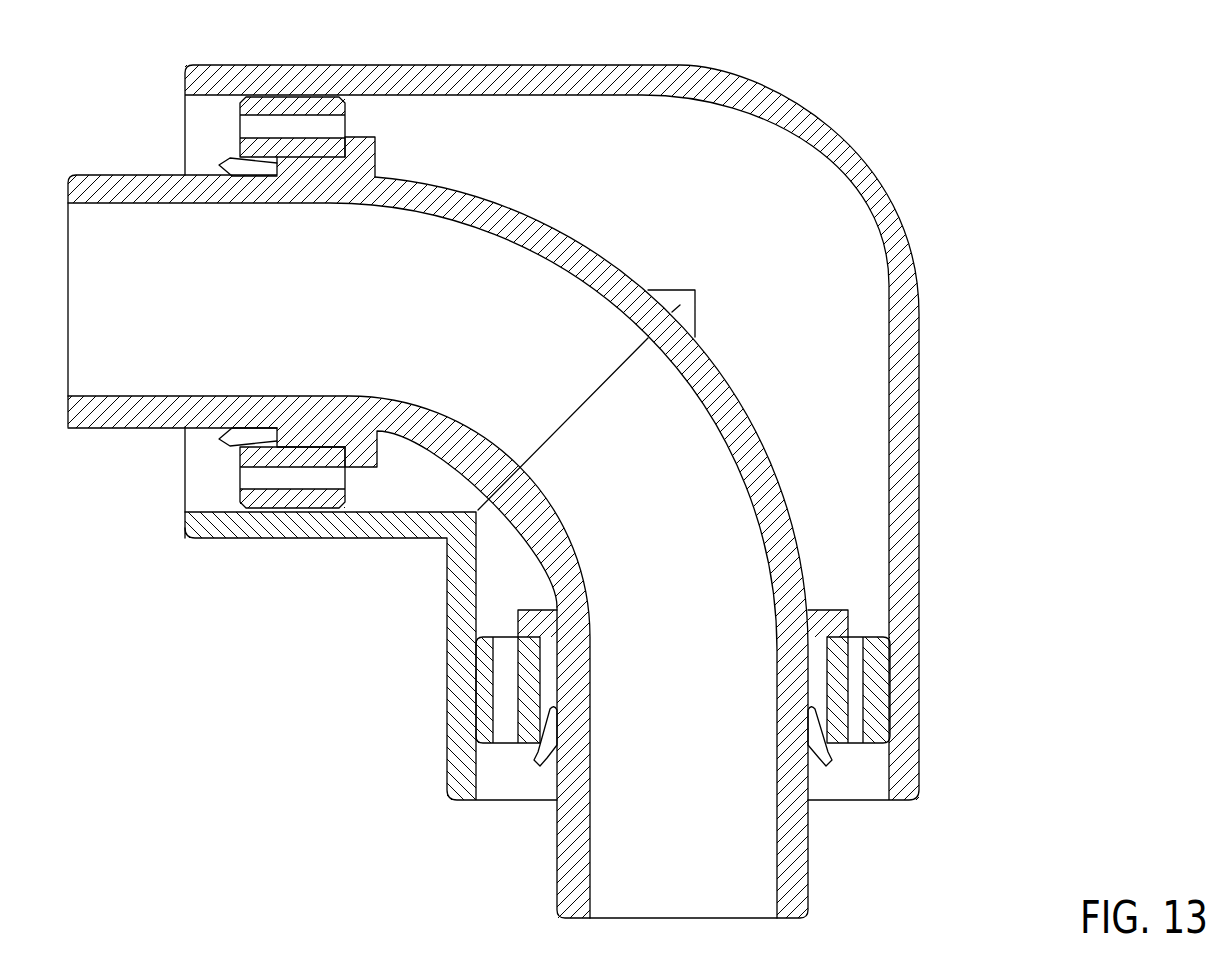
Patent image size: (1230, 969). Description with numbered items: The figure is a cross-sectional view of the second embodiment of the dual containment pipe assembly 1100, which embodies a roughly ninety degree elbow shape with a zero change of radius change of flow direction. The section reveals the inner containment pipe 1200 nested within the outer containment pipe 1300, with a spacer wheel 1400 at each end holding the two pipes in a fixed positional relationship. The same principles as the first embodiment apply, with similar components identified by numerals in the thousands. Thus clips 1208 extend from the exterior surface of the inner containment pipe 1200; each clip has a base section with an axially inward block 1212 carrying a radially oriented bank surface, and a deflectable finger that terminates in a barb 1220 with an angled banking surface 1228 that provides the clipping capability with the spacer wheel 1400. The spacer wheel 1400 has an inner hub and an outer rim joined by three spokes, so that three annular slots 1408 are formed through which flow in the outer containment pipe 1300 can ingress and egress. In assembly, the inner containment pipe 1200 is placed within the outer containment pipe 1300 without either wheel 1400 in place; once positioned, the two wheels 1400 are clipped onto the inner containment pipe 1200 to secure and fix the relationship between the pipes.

The dual containment pipe assembly 1100 is at (160, 794).
The inner containment pipe 1200 is at (93, 178).
The clip 1208 is at (543, 762).
The axially inward block 1212 is at (360, 150).
The barb 1220 is at (223, 443).
The angled banking surface 1228 is at (228, 160).
The outer containment pipe 1300 is at (198, 531).
The spacer wheel 1400 is at (285, 541).
The annular slot 1408 is at (504, 637).